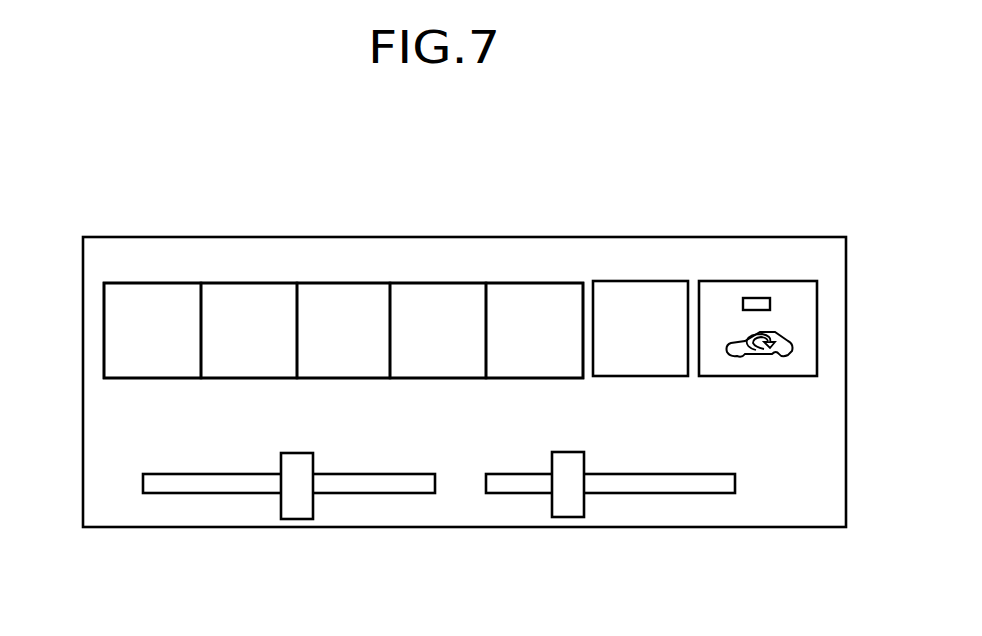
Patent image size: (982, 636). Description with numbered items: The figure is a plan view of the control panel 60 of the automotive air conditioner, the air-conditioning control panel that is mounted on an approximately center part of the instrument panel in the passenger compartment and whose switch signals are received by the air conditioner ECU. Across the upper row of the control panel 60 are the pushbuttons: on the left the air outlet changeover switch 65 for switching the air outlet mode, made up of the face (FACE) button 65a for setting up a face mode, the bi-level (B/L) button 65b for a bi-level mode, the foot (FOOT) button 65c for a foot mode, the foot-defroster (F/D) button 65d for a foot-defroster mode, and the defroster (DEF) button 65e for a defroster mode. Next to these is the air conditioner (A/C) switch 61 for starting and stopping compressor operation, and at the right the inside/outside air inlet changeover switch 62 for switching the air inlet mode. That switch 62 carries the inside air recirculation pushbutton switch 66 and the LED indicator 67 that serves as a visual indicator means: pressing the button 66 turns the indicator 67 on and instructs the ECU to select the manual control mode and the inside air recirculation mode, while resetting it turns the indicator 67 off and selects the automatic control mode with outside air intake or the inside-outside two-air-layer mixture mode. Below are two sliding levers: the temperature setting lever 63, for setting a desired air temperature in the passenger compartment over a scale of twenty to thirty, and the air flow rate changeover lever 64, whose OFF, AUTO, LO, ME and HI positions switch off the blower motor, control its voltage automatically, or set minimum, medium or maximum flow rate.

The control panel 60 is at (98, 237).
The air conditioner (A/C) switch 61 is at (631, 290).
The inside/outside air inlet changeover switch 62 is at (740, 170).
The temperature setting lever 63 is at (294, 513).
The air flow rate changeover lever 64 is at (565, 510).
The air outlet changeover switch 65 is at (130, 172).
The face (FACE) button 65a is at (140, 290).
The bi-level (B/L) button 65b is at (230, 290).
The foot (FOOT) button 65c is at (335, 290).
The foot-defroster (F/D) button 65d is at (422, 290).
The defroster (DEF) button 65e is at (522, 290).
The inside air recirculation pushbutton switch 66 is at (729, 312).
The light-emitting diode (LED) indicator 67 is at (768, 298).